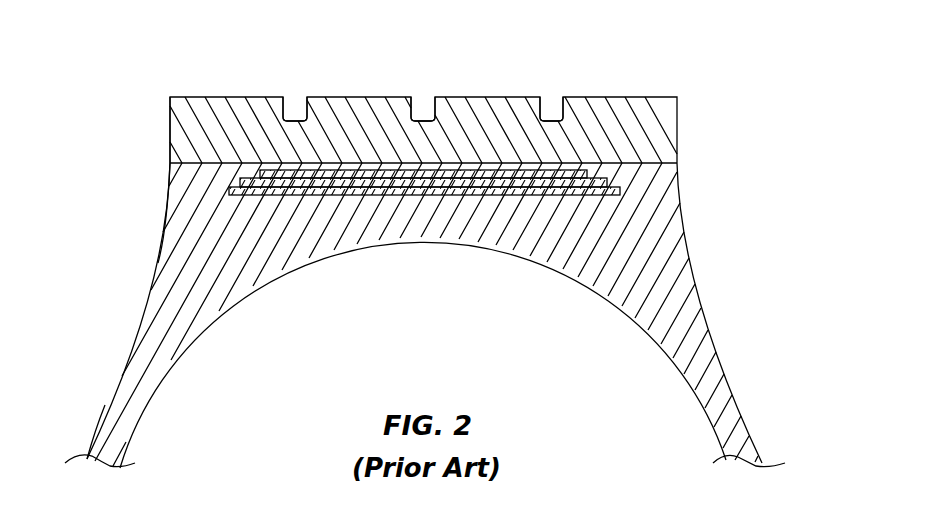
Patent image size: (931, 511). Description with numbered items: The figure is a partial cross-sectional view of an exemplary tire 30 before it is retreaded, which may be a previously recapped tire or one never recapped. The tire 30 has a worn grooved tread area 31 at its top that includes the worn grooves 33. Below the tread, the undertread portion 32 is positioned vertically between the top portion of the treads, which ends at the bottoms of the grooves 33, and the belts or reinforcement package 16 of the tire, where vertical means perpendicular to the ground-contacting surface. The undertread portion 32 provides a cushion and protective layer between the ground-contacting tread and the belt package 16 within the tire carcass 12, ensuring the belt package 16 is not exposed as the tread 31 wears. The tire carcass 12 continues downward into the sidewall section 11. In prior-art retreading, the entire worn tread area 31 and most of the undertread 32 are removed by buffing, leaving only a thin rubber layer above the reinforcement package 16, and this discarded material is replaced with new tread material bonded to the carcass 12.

The tire 30 is at (727, 322).
The worn grooved tread area 31 is at (577, 113).
The undertread portion 32 is at (182, 130).
The worn grooves 33 is at (294, 106).
The reinforcement package 16 is at (422, 197).
The tire carcass 12 is at (158, 263).
The sidewall section 11 is at (98, 417).